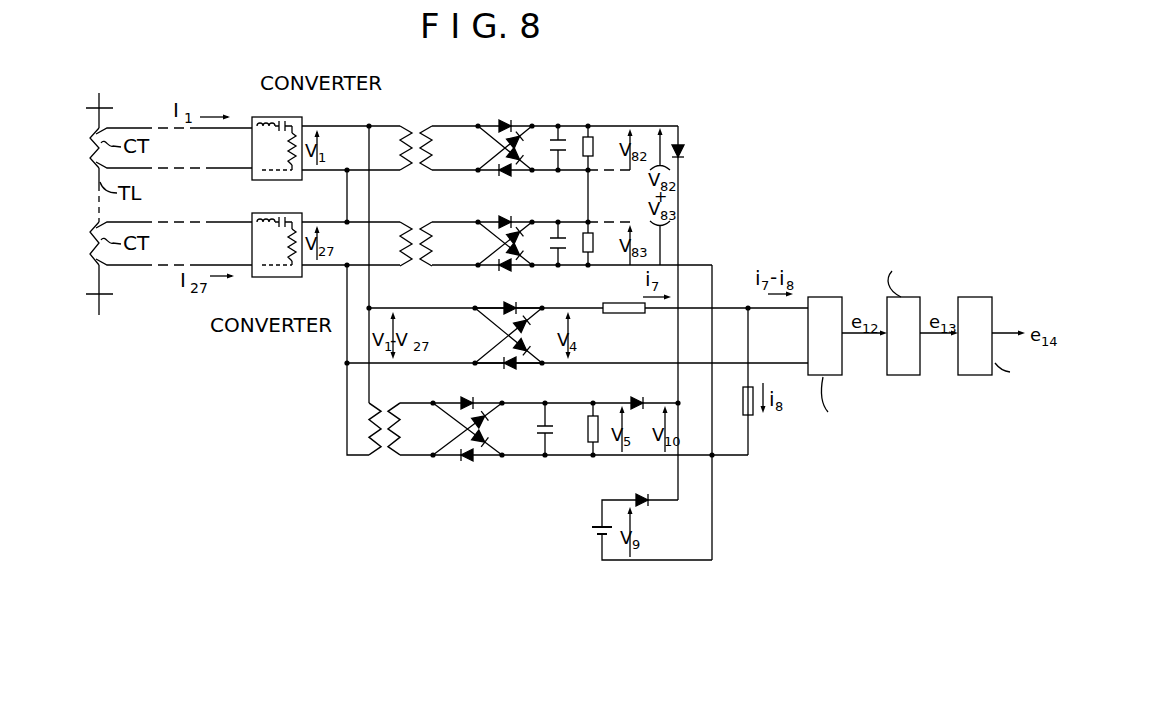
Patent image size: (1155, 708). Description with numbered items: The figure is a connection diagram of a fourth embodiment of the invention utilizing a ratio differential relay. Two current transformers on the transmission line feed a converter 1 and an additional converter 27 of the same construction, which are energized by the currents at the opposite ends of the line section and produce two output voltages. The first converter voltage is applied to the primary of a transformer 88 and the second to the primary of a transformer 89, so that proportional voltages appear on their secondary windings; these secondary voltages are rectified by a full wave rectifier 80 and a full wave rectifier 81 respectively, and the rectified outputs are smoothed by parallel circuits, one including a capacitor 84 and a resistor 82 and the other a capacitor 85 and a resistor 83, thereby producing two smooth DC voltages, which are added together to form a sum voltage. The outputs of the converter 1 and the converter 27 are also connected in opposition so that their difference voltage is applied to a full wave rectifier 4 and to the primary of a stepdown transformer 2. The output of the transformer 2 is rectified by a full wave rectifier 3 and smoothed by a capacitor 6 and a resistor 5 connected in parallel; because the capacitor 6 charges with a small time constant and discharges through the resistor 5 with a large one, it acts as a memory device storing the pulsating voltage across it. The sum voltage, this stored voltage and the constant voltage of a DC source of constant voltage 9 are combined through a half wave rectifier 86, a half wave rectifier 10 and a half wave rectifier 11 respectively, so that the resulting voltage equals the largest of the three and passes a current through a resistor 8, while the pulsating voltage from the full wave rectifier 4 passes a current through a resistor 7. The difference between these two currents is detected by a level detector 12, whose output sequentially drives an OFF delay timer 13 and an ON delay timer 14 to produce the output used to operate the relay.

The converter 1 is at (265, 117).
The additional converter 27 is at (272, 277).
The stepdown transformer 2 is at (384, 404).
The full wave rectifier 3 is at (454, 431).
The full wave rectifier 4 is at (486, 339).
The resistor 5 is at (589, 431).
The capacitor 6 is at (544, 431).
The resistor 7 is at (624, 314).
The resistor 8 is at (743, 400).
The DC source of constant voltage 9 is at (590, 533).
The half wave rectifier 10 is at (637, 400).
The half wave rectifier 11 is at (642, 497).
The level detector 12 is at (884, 370).
The OFF delay timer 13 is at (980, 315).
The ON delay timer 14 is at (1036, 350).
The full wave rectifier 80 is at (493, 150).
The full wave rectifier 81 is at (493, 244).
The resistor 82 is at (593, 142).
The resistor 83 is at (593, 238).
The capacitor 84 is at (558, 126).
The capacitor 85 is at (558, 222).
The half wave rectifier 86 is at (685, 151).
The transformer 88 is at (423, 125).
The transformer 89 is at (423, 221).